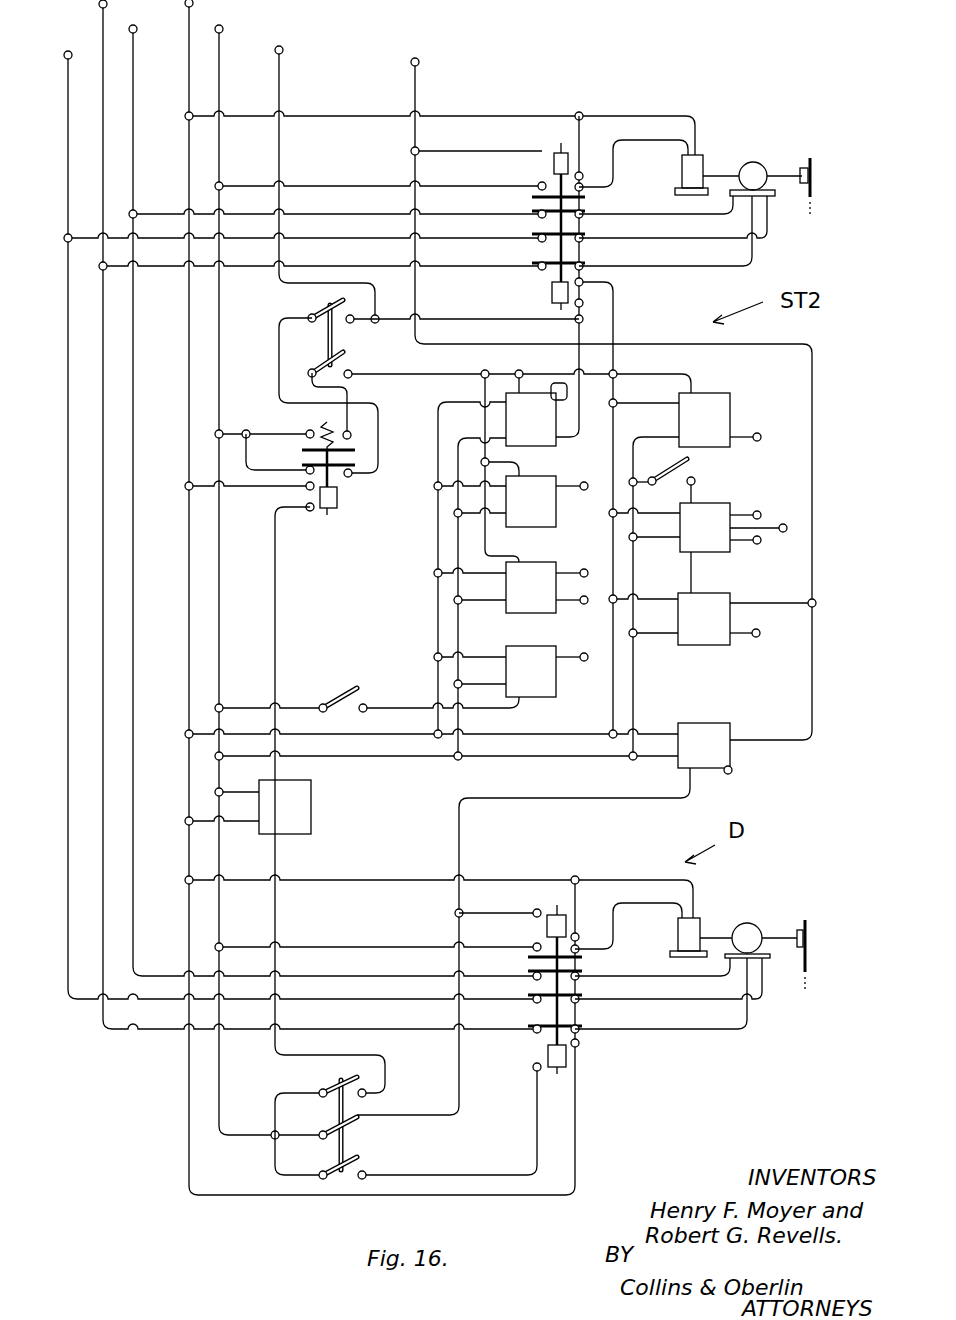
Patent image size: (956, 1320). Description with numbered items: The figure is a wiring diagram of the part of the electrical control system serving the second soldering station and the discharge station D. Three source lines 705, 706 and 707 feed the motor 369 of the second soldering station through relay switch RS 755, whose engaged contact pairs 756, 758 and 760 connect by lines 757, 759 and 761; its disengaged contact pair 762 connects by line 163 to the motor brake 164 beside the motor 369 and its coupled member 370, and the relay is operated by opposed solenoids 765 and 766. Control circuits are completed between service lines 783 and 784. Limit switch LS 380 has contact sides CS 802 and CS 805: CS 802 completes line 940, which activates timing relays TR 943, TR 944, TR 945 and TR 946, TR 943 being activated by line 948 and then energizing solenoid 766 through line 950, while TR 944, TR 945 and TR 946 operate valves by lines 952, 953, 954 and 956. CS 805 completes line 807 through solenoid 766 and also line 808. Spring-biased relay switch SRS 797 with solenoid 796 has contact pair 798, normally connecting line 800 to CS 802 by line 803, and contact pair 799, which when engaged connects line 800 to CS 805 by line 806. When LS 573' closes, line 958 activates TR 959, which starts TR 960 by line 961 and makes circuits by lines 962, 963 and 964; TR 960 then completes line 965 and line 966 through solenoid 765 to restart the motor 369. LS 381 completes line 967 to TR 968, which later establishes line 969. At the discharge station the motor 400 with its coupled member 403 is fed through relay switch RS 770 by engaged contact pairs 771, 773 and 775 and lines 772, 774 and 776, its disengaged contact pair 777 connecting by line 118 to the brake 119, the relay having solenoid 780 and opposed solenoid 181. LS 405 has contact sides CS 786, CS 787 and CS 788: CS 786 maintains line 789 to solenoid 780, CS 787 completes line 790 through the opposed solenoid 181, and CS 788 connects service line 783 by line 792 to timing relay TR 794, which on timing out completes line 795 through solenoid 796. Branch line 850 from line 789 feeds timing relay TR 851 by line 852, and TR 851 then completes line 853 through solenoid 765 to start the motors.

The source line 707 is at (68, 106).
The source line 706 is at (102, 53).
The source line 705 is at (135, 34).
The service line 784 is at (188, 80).
The service line 783 is at (222, 58).
The line 808 is at (280, 86).
The line 853 is at (419, 84).
The solenoid 765 is at (556, 276).
The solenoid 766 is at (552, 291).
The disengaged contact pair 762 is at (541, 184).
The engaged contact pair 756 is at (538, 213).
The engaged contact pair 758 is at (538, 238).
The engaged contact pair 760 is at (538, 266).
The line 757 is at (622, 216).
The line 759 is at (622, 242).
The line 761 is at (620, 270).
The wire 163 is at (635, 141).
The solenoid coil 164 is at (690, 169).
The motor 369 is at (755, 168).
The drive wheel 370 is at (813, 194).
The relay switch 755 is at (617, 284).
The line 807 is at (430, 320).
The limit switch 380 is at (346, 338).
The contact side 805 is at (310, 315).
The contact side 802 is at (318, 368).
The line 806 is at (278, 366).
The line 803 is at (380, 425).
The line 940 is at (402, 372).
The line 948 is at (559, 383).
The timing relay 943 is at (531, 419).
The line 950 is at (577, 438).
The timing relay 944 is at (495, 501).
The line 952 is at (582, 489).
The timing relay 945 is at (495, 587).
The line 953 is at (569, 571).
The line 954 is at (580, 602).
The timing relay 968 is at (459, 677).
The line 969 is at (581, 660).
The limit switch 381 is at (342, 692).
The line 967 is at (397, 697).
The timing relay 946 is at (669, 420).
The line 956 is at (745, 436).
The limit switch 573' is at (691, 467).
The line 958 is at (693, 485).
The timing relay 959 is at (669, 527).
The line 962 is at (745, 513).
The line 963 is at (762, 529).
The line 964 is at (742, 542).
The line 961 is at (690, 569).
The timing relay 960 is at (669, 619).
The line 966 is at (758, 604).
The line 965 is at (756, 637).
The timing relay 851 is at (704, 745).
The line 852 is at (732, 770).
The branch line 850 is at (600, 795).
The contact pair 799 is at (306, 432).
The line 800 is at (275, 460).
The contact pair 798 is at (351, 481).
The spring-biased relay switch 797 is at (351, 491).
The solenoid 796 is at (330, 500).
The line 795 is at (277, 602).
The line 792 is at (277, 915).
The timing relay 794 is at (248, 807).
The solenoid 780 is at (555, 965).
The relay coil 181 is at (547, 1053).
The line 789 is at (472, 913).
The disengaged contact pair 777 is at (535, 946).
The engaged contact pair 771 is at (528, 975).
The engaged contact pair 773 is at (530, 997).
The engaged contact pair 775 is at (528, 1025).
The wire 118 is at (633, 903).
The solenoid coil 119 is at (688, 938).
The motor 400 is at (750, 930).
The drive wheel 403 is at (807, 966).
The line 772 is at (617, 977).
The line 774 is at (628, 1002).
The line 776 is at (635, 1032).
The relay switch 770 is at (592, 1046).
The line 790 is at (536, 1091).
The limit switch 405 is at (360, 1142).
The contact side 788 is at (327, 1090).
The contact side 786 is at (326, 1130).
The contact side 787 is at (326, 1171).